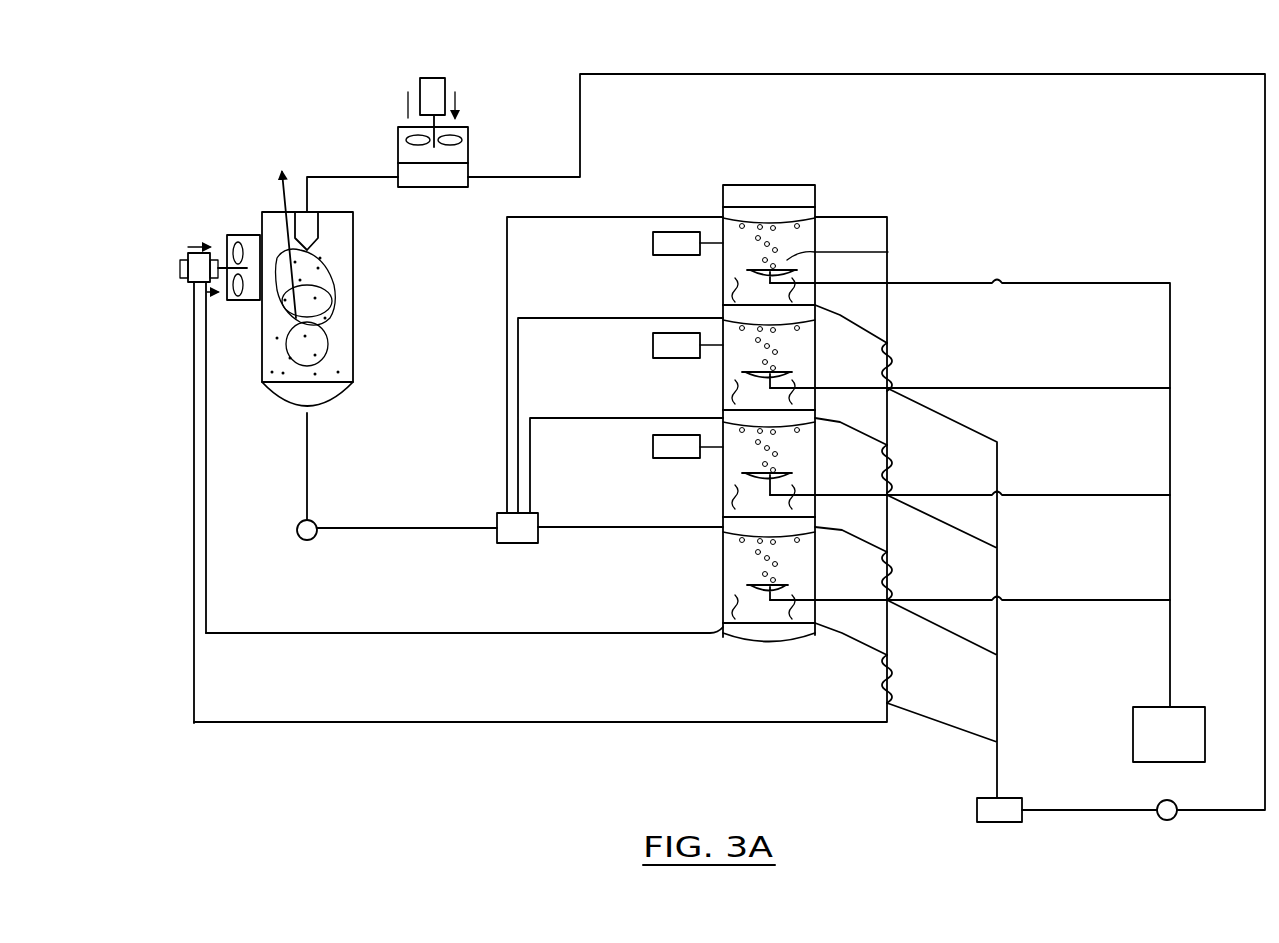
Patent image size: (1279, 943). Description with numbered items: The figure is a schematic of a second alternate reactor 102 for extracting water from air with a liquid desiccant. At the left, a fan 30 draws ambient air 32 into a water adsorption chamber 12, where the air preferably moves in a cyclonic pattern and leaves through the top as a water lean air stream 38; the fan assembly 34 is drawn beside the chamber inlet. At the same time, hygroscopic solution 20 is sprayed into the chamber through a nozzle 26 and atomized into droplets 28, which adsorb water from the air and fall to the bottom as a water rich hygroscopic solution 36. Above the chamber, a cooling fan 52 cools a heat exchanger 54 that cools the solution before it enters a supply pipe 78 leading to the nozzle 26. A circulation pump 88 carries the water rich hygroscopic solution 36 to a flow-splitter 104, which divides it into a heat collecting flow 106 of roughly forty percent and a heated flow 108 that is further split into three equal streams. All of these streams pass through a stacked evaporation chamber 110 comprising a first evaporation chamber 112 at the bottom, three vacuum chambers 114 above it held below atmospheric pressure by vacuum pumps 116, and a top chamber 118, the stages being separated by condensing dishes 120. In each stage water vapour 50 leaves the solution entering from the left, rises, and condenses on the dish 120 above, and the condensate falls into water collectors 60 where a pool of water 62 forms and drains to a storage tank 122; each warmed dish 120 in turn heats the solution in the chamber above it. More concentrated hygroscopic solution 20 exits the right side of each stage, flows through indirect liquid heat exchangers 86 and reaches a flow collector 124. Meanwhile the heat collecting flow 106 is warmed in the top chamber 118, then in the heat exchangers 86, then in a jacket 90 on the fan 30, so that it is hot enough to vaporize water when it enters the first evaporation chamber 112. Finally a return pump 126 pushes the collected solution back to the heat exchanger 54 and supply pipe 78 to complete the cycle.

The water adsorption chamber 12 is at (260, 332).
The hygroscopic solution 20 is at (817, 312).
The nozzle 26 is at (312, 228).
The droplets 28 is at (333, 340).
The fan 30 is at (187, 283).
The ambient air 32 is at (195, 243).
The agitator motor 34 is at (237, 235).
The water rich hygroscopic solution 36 is at (278, 398).
The water lean air stream 38 is at (277, 193).
The water vapour 50 is at (733, 282).
The cooling fan 52 is at (440, 83).
The heat exchanger 54 is at (463, 168).
The water collector 60 is at (747, 267).
The pool of water 62 is at (783, 583).
The supply pipe 78 is at (345, 177).
The indirect liquid heat exchanger 86 is at (890, 345).
The circulation pump 88 is at (313, 522).
The jacket 90 is at (190, 253).
The second alternate reactor 102 is at (600, 752).
The flow-splitter 104 is at (507, 545).
The heat collecting flow 106 is at (577, 217).
The heated flow 108 is at (577, 317).
The evaporation chamber 110 is at (797, 183).
The first evaporation chamber 112 is at (720, 633).
The vacuum chamber 114 is at (722, 300).
The vacuum pump 116 is at (652, 243).
The top chamber 118 is at (730, 188).
The condensing dish 120 is at (817, 220).
The storage tank 122 is at (1147, 718).
The flow collector 124 is at (977, 807).
The return pump 126 is at (1177, 802).